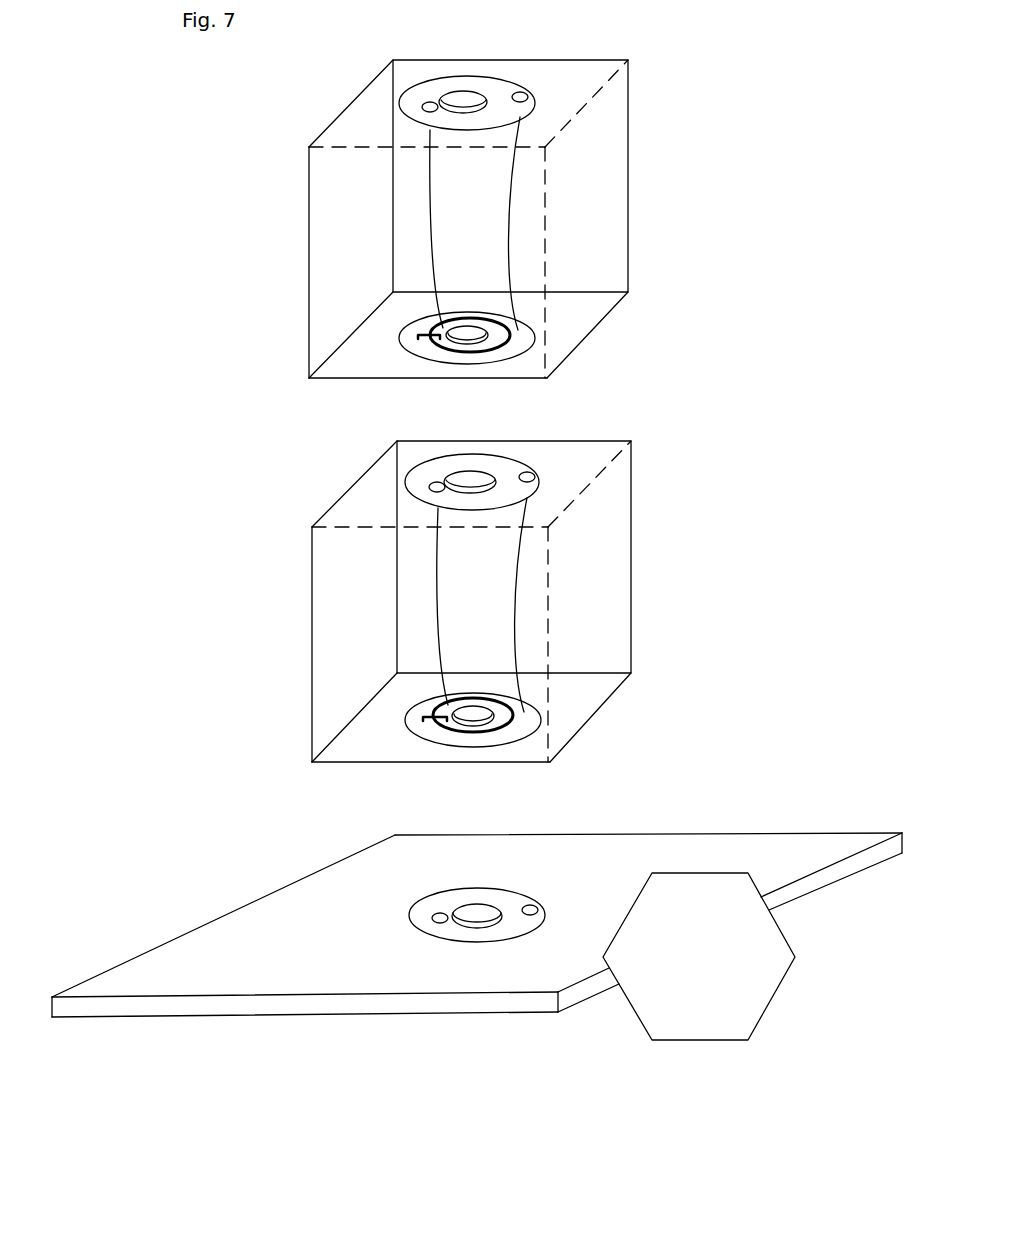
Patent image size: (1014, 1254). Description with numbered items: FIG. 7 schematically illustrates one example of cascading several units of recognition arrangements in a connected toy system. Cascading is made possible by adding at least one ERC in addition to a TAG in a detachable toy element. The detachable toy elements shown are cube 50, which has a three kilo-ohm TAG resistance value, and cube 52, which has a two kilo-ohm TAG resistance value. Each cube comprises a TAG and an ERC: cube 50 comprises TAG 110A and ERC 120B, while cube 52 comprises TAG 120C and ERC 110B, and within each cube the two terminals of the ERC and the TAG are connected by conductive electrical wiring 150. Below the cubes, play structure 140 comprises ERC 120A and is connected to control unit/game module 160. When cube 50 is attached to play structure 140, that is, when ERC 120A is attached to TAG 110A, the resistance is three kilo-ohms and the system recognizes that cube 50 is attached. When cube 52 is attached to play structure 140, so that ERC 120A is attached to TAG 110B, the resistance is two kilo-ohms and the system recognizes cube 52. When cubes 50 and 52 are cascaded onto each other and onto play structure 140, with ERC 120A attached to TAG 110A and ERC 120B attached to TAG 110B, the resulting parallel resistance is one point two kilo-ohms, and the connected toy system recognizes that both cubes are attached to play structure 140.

The cube 52 is at (628, 98).
The cube 50 is at (631, 478).
The conductive electrical wiring 150 is at (510, 227).
The TAG 120C is at (400, 99).
The ERC 120B is at (407, 479).
The ERC 120A is at (407, 907).
The ERC 110B is at (400, 345).
The TAG 110A is at (407, 727).
The play structure 140 is at (285, 980).
The control unit/game module 160 is at (695, 1015).